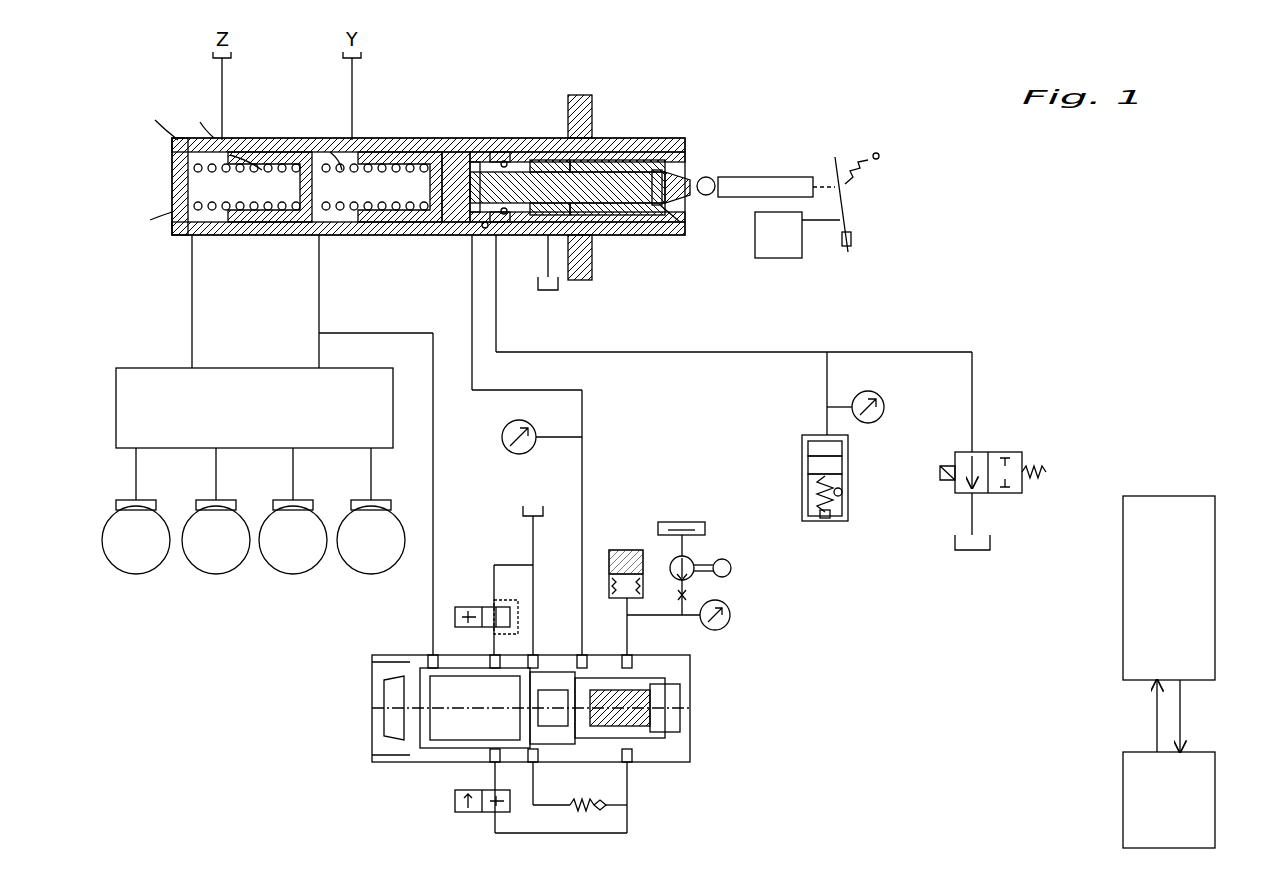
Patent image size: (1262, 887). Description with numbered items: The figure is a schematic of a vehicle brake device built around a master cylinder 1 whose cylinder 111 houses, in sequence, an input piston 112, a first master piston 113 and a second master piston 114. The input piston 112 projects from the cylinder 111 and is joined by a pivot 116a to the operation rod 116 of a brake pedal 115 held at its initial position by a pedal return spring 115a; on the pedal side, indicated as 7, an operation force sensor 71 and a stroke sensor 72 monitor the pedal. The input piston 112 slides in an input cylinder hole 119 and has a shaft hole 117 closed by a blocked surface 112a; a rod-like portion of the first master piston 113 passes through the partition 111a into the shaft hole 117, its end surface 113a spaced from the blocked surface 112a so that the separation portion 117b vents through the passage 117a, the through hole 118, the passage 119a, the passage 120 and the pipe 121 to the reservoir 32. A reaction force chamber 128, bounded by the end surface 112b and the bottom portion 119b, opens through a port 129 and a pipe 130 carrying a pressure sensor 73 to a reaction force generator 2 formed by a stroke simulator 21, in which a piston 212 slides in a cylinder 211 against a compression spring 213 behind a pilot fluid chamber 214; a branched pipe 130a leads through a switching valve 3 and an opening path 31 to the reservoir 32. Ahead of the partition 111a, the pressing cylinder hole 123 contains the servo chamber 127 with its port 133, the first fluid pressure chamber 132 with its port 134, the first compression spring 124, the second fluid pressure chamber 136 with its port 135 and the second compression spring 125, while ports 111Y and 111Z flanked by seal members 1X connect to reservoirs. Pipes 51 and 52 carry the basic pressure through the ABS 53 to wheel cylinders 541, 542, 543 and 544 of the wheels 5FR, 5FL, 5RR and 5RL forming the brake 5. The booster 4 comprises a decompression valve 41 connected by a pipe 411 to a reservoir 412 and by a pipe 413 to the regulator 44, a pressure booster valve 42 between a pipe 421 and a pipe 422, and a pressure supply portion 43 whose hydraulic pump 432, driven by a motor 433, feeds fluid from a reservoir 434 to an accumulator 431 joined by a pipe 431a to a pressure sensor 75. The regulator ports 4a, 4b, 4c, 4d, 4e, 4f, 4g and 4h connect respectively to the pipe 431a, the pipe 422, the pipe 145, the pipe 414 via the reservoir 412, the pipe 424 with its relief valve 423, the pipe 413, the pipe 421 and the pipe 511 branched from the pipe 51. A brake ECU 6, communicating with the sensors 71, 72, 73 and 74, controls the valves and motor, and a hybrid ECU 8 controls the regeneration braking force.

The master cylinder 1 is at (738, 118).
The cylinder 111 is at (388, 138).
The port 111Y is at (356, 138).
The port 111Z is at (226, 138).
The partition 111a is at (488, 138).
The input piston 112 is at (692, 172).
The blocked surface 112a is at (680, 230).
The end surface 112b is at (590, 100).
The first master piston 113 is at (440, 160).
The end surface 113a is at (660, 222).
The second master piston 114 is at (262, 138).
The brake pedal 115 is at (838, 165).
The pedal return spring 115a is at (866, 175).
The operation rod 116 is at (780, 177).
The pivot 116a is at (712, 178).
The shaft hole 117 is at (600, 160).
The passage 117a is at (625, 222).
The separation portion 117b is at (660, 225).
The through hole 118 is at (655, 225).
The input cylinder hole 119 is at (548, 138).
The passage 119a is at (600, 240).
The bottom portion 119b is at (512, 152).
The passage 120 is at (565, 250).
The pipe 121 is at (545, 272).
The pressing cylinder hole 123 is at (338, 138).
The first compression spring 124 is at (392, 208).
The second compression spring 125 is at (142, 223).
The servo chamber 127 is at (474, 138).
The reaction force chamber 128 is at (510, 138).
The port 129 is at (498, 235).
The pipe 130 is at (496, 316).
The branched pipe 130a is at (972, 378).
The first fluid pressure chamber 132 is at (326, 180).
The port 133 is at (460, 222).
The port 134 is at (338, 235).
The port 135 is at (214, 235).
The second fluid pressure chamber 136 is at (151, 122).
The pipe 145 is at (472, 288).
The seal members 1X is at (325, 54).
The reaction force generator 2 is at (860, 540).
The stroke simulator 21 is at (832, 521).
The cylinder 211 is at (838, 494).
The piston 212 is at (838, 462).
The compression spring 213 is at (836, 516).
The pilot fluid chamber 214 is at (808, 448).
The switching valve 3 is at (1028, 494).
The opening path 31 is at (972, 514).
The reservoir 32 is at (538, 290).
The booster 4 is at (774, 690).
The decompression valve 41 is at (466, 602).
The pipe 411 is at (496, 580).
The reservoir 412 is at (528, 506).
The pipe 413 is at (494, 644).
The pipe 414 is at (538, 586).
The pressure booster valve 42 is at (468, 816).
The pipe 421 is at (488, 776).
The pipe 422 is at (552, 833).
The relief valve 423 is at (580, 810).
The pipe 424 is at (533, 805).
The pressure supply portion 43 is at (638, 528).
The accumulator 431 is at (612, 580).
The pipe 431a is at (640, 626).
The hydraulic pump 432 is at (670, 566).
The motor 433 is at (730, 574).
The reservoir 434 is at (705, 526).
The regulator 44 is at (692, 738).
The port 4a is at (630, 660).
The port 4b is at (628, 762).
The port 4c is at (584, 660).
The port 4d is at (536, 660).
The port 4e is at (536, 762).
The port 4f is at (496, 660).
The port 4g is at (496, 762).
The port 4h is at (432, 655).
The brake 5 is at (80, 520).
The pipe 51 is at (319, 304).
The pipe 511 is at (433, 380).
The pipe 52 is at (192, 304).
The ABS 53 is at (124, 366).
The wheel cylinder 541 is at (150, 500).
The wheel cylinder 542 is at (228, 500).
The wheel cylinder 543 is at (305, 500).
The wheel cylinder 544 is at (380, 500).
The vehicle wheel 5FR is at (118, 568).
The vehicle wheel 5FL is at (196, 568).
The vehicle wheel 5RR is at (274, 568).
The vehicle wheel 5RL is at (350, 568).
The brake ECU 6 is at (1215, 528).
The pedal unit 7 is at (884, 252).
The operation force sensor 71 is at (855, 240).
The stroke sensor 72 is at (778, 258).
The pressure sensor 73 is at (880, 394).
The sensor 74 is at (502, 432).
The pressure sensor 75 is at (722, 628).
The hybrid ECU 8 is at (1215, 782).